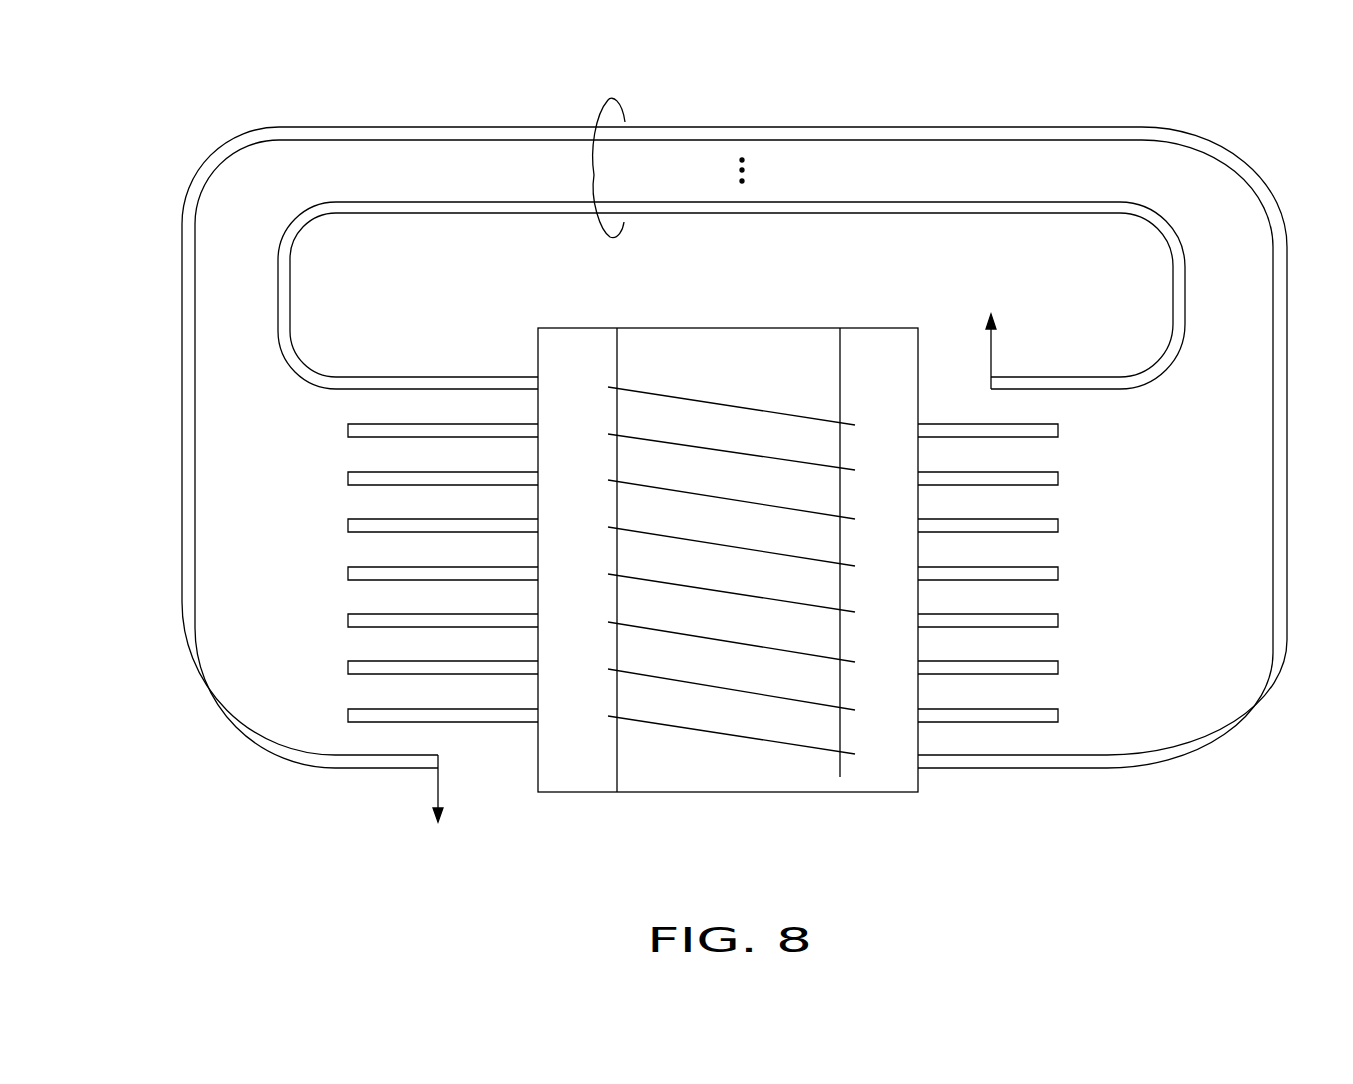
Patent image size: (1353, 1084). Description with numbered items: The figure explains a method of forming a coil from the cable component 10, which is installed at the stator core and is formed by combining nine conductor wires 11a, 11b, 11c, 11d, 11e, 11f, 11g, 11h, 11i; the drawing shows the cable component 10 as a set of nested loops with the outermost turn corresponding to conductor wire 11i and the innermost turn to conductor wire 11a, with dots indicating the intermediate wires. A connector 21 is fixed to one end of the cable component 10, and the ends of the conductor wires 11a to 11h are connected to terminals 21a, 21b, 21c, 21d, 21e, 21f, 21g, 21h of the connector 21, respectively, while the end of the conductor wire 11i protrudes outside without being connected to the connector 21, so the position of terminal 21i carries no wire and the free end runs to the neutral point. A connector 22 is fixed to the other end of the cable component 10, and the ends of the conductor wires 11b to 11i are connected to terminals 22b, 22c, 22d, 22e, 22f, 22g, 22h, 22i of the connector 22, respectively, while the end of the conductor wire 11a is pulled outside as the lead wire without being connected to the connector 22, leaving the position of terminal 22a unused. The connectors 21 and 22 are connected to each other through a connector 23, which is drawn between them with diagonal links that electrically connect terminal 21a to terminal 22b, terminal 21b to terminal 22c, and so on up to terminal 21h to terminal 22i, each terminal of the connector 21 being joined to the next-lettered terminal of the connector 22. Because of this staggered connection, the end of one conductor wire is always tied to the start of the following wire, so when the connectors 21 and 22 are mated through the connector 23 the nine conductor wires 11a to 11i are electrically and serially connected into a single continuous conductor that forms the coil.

The cable component 10 is at (582, 110).
The conductor wire 11a is at (297, 245).
The conductor wire 11b is at (393, 423).
The conductor wire 11c is at (393, 471).
The conductor wire 11d is at (393, 518).
The conductor wire 11e is at (393, 566).
The conductor wire 11f is at (393, 613).
The conductor wire 11g is at (393, 660).
The conductor wire 11h is at (393, 708).
The conductor wire 11i is at (188, 210).
The connector 21 is at (570, 328).
The connector 22 is at (877, 328).
The connector 23 is at (747, 328).
The terminal 21a is at (712, 400).
The terminal 21b is at (712, 446).
The terminal 21c is at (713, 493).
The terminal 21d is at (712, 540).
The terminal 21e is at (712, 587).
The terminal 21f is at (714, 636).
The terminal 21g is at (712, 683).
The terminal 21h is at (712, 729).
The terminal 21i is at (589, 751).
The terminal 22a is at (878, 385).
The terminal 22b is at (878, 425).
The terminal 22c is at (877, 470).
The terminal 22d is at (878, 519).
The terminal 22e is at (878, 566).
The terminal 22f is at (876, 612).
The terminal 22g is at (878, 662).
The terminal 22h is at (878, 710).
The terminal 22i is at (875, 754).